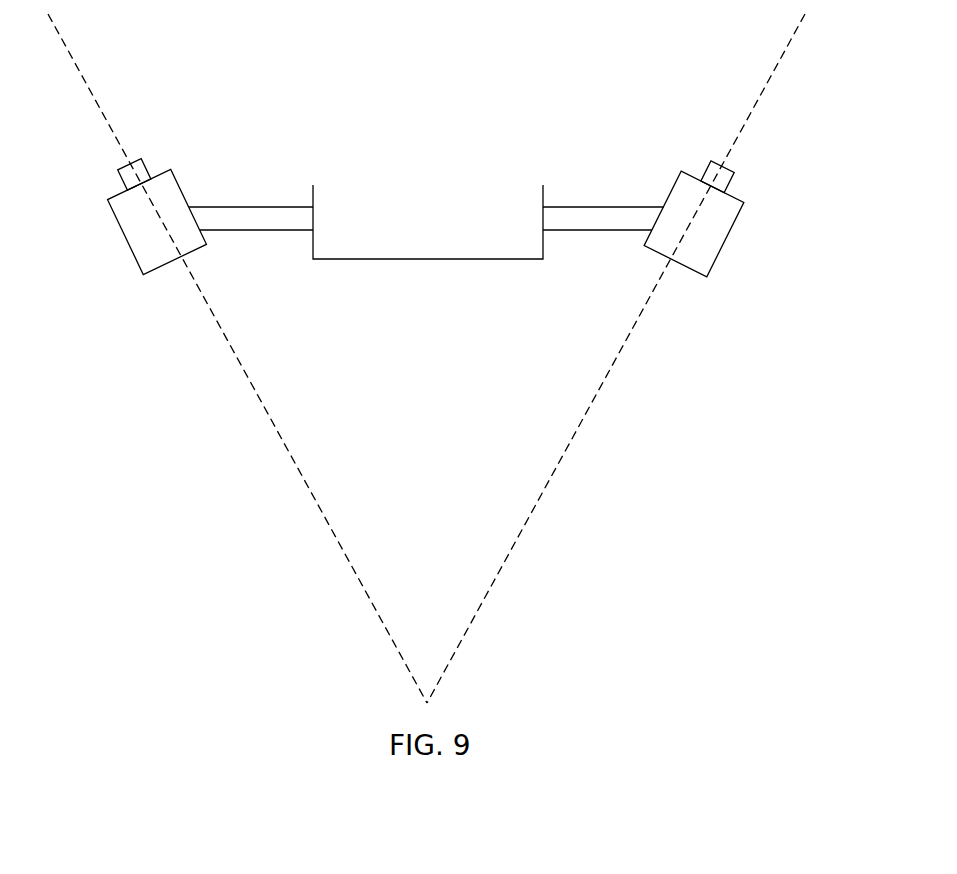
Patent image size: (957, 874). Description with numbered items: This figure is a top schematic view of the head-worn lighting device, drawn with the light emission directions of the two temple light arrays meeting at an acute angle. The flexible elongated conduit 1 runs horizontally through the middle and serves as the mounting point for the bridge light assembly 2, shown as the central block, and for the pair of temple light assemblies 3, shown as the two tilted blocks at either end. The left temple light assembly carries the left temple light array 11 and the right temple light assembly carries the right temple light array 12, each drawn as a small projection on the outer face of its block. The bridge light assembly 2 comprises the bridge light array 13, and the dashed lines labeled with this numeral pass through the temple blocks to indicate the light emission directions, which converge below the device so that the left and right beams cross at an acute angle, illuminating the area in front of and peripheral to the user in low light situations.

The elongated conduit 1 is at (242, 212).
The bridge light assembly 2 is at (433, 233).
The pair of temple light assemblies 3 is at (155, 248).
The left temple light array 11 is at (128, 177).
The right temple light array 12 is at (733, 175).
The bridge light array 13 is at (103, 112).